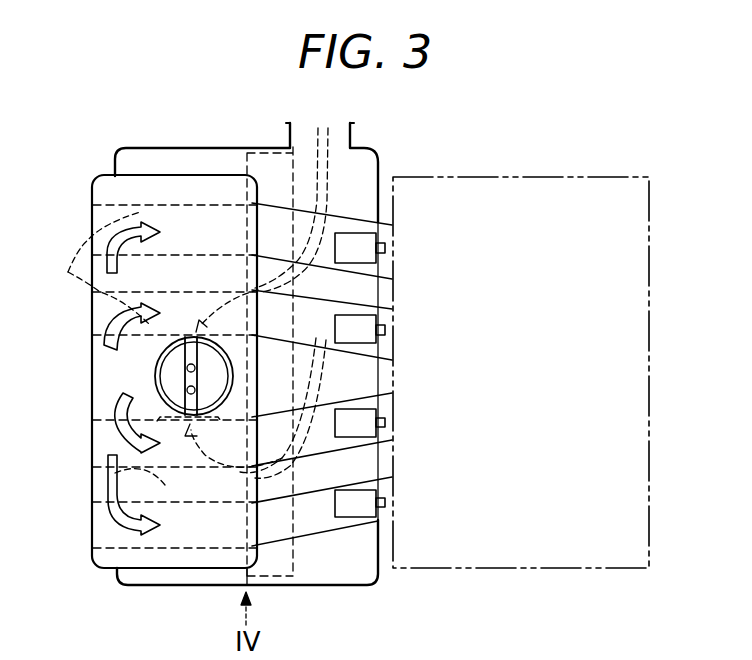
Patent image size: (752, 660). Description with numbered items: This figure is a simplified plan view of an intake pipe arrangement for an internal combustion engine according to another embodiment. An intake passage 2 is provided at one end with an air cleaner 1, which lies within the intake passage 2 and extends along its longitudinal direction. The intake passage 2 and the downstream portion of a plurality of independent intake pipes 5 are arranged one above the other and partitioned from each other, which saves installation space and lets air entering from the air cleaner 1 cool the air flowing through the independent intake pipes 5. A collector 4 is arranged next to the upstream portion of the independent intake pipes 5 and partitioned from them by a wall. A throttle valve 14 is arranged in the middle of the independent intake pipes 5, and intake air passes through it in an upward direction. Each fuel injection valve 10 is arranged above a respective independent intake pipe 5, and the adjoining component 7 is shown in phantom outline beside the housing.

The air cleaner 1 is at (280, 567).
The intake passage 2 is at (343, 550).
The collector 4 is at (165, 180).
The independent intake pipes 5 is at (350, 525).
The mounting panel 7 is at (553, 160).
The fuel injection valve 10 is at (365, 323).
The throttle valve 14 is at (170, 367).